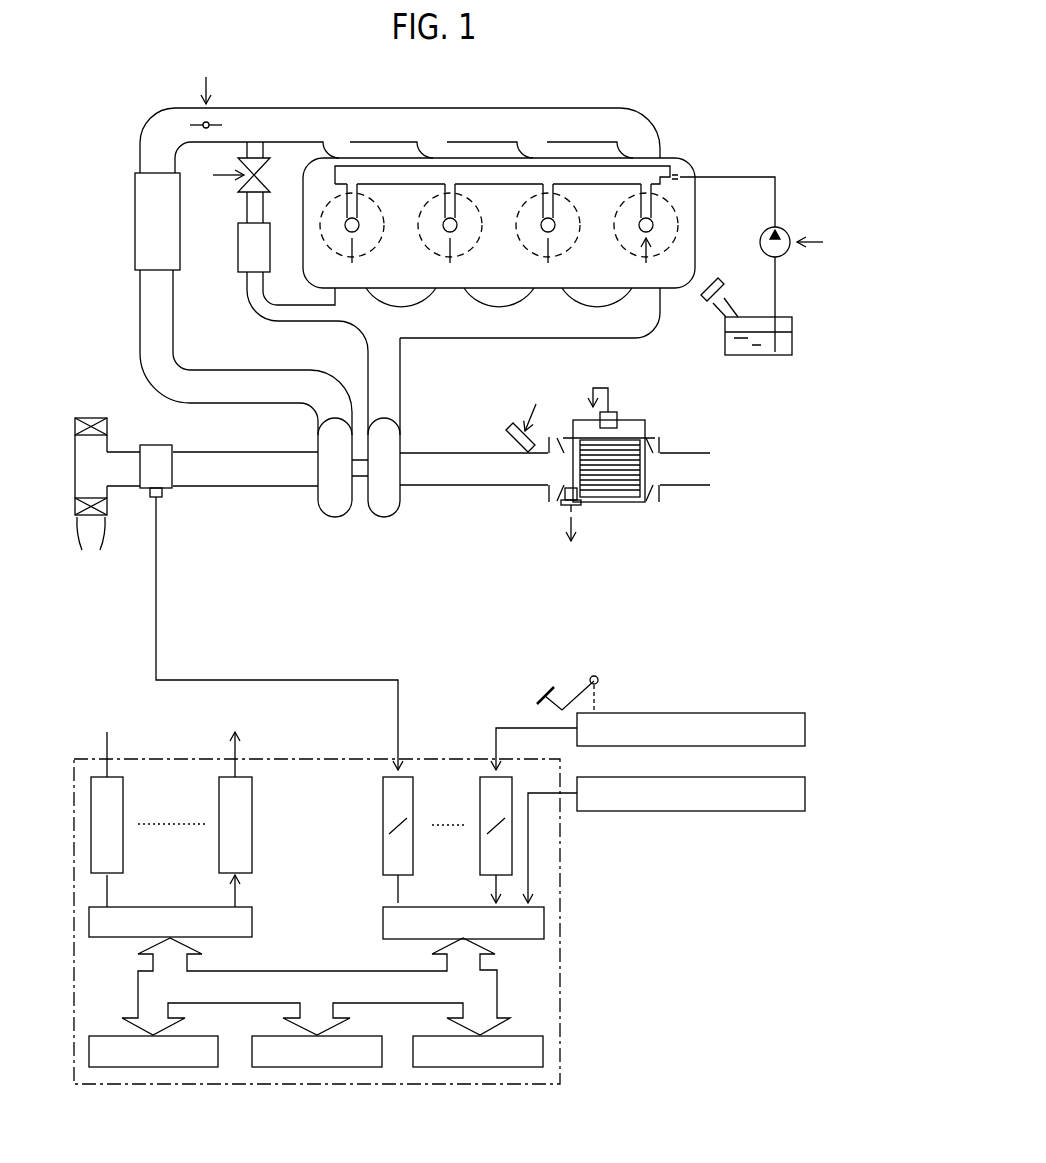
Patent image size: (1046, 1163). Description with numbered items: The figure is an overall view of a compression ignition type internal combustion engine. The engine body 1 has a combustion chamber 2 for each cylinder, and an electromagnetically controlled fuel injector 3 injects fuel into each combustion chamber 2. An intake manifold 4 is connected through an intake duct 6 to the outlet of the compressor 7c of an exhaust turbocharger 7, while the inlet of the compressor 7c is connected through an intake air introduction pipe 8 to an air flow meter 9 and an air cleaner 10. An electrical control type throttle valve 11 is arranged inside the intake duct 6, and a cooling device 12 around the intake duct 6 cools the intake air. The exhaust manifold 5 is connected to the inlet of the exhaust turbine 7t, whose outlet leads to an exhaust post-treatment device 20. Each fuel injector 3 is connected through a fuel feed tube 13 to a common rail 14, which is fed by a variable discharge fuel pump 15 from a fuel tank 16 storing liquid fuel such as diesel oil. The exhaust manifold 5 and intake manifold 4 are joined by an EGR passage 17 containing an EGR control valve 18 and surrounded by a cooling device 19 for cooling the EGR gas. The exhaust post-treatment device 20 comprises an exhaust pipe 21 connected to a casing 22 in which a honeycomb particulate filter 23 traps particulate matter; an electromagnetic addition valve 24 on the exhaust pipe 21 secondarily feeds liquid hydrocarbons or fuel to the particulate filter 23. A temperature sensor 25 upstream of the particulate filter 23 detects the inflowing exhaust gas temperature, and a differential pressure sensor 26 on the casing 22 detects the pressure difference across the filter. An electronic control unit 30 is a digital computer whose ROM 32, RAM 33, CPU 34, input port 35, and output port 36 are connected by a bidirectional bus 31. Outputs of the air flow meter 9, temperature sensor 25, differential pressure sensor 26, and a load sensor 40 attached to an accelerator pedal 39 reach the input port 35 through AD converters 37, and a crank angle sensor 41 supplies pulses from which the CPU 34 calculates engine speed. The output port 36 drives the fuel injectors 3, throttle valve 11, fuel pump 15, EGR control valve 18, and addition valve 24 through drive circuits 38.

The body of compression ignition type internal combustion engine 1 is at (544, 200).
The combustion chamber 2 is at (612, 238).
The fuel injector 3 is at (536, 258).
The intake manifold 4 is at (580, 110).
The exhaust manifold 5 is at (640, 337).
The intake duct 6 is at (150, 125).
The exhaust turbocharger 7 is at (361, 504).
The compressor 7c is at (318, 498).
The exhaust turbine 7t is at (401, 501).
The intake air introduction pipe 8 is at (214, 487).
The air flow meter 9 is at (147, 445).
The air cleaner 10 is at (108, 517).
The throttle valve 11 is at (194, 124).
The cooling device 12 is at (135, 238).
The fuel feed tube 13 is at (653, 227).
The common rail 14 is at (661, 163).
The fuel pump 15 is at (763, 225).
The fuel tank 16 is at (758, 317).
The EGR passage 17 is at (249, 306).
The EGR control valve 18 is at (240, 190).
The cooling device 19 is at (237, 257).
The exhaust post-treatment device 20 is at (578, 461).
The exhaust pipe 21 is at (418, 453).
The casing 22 is at (597, 461).
The particulate filter 23 is at (603, 488).
The addition valve 24 is at (521, 430).
The temperature sensor 25 is at (562, 508).
The differential pressure sensor 26 is at (620, 415).
The electronic control unit 30 is at (325, 920).
The bidirectional bus 31 is at (497, 990).
The ROM 32 is at (205, 1069).
The RAM 33 is at (364, 1069).
The CPU 34 is at (530, 1069).
The input port 35 is at (383, 920).
The output port 36 is at (253, 920).
The AD converter 37 is at (480, 792).
The drive circuit 38 is at (219, 790).
The accelerator pedal 39 is at (593, 677).
The load sensor 40 is at (744, 713).
The crank angle sensor 41 is at (744, 777).